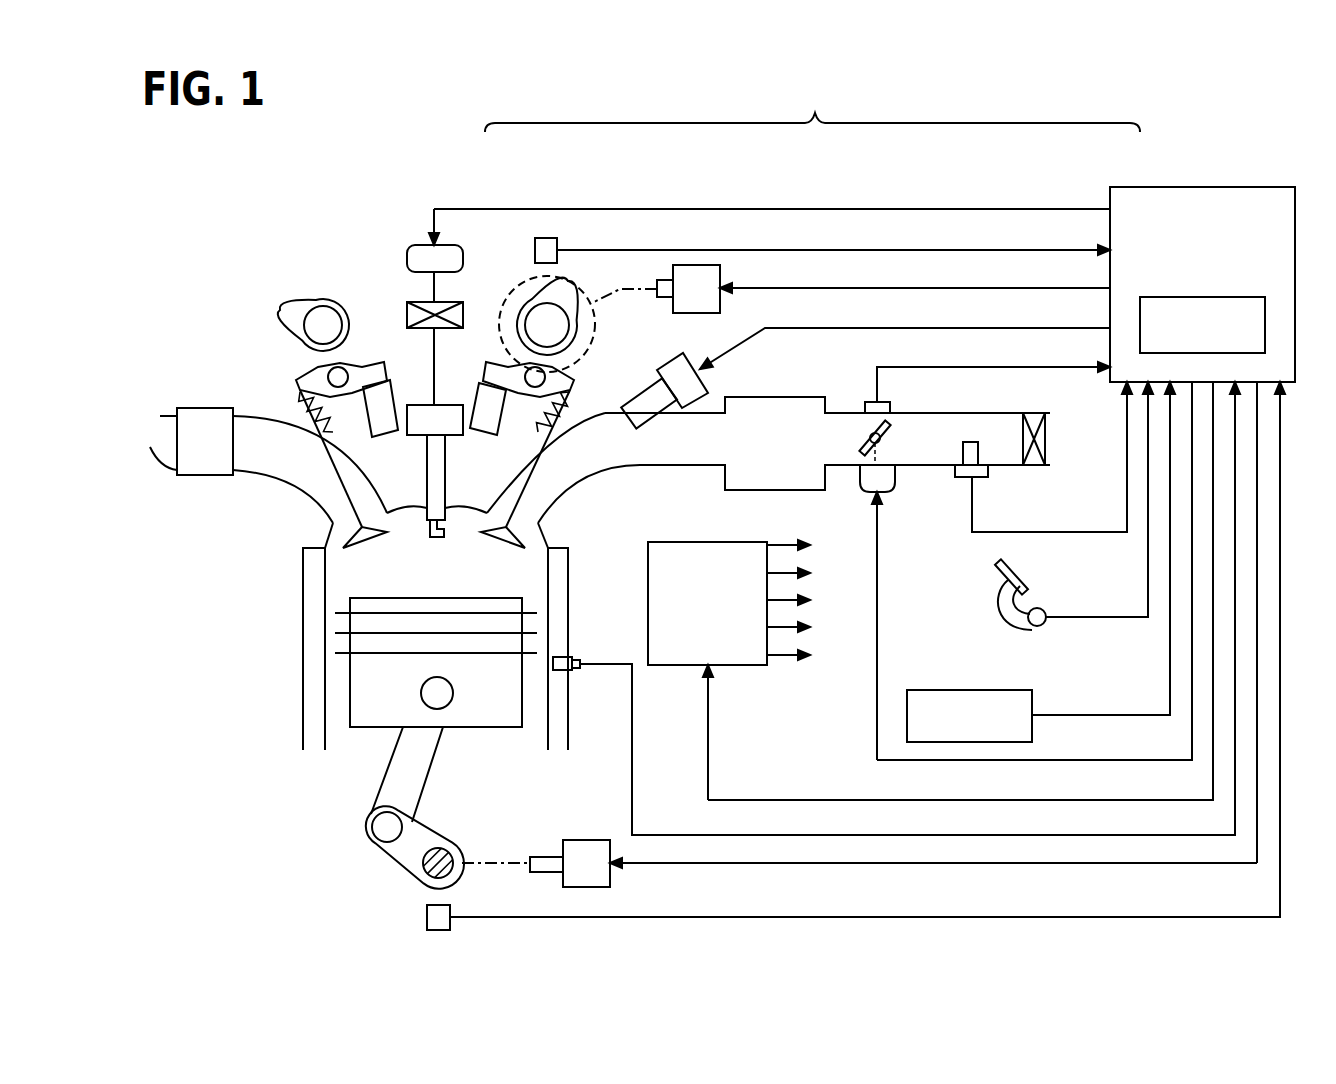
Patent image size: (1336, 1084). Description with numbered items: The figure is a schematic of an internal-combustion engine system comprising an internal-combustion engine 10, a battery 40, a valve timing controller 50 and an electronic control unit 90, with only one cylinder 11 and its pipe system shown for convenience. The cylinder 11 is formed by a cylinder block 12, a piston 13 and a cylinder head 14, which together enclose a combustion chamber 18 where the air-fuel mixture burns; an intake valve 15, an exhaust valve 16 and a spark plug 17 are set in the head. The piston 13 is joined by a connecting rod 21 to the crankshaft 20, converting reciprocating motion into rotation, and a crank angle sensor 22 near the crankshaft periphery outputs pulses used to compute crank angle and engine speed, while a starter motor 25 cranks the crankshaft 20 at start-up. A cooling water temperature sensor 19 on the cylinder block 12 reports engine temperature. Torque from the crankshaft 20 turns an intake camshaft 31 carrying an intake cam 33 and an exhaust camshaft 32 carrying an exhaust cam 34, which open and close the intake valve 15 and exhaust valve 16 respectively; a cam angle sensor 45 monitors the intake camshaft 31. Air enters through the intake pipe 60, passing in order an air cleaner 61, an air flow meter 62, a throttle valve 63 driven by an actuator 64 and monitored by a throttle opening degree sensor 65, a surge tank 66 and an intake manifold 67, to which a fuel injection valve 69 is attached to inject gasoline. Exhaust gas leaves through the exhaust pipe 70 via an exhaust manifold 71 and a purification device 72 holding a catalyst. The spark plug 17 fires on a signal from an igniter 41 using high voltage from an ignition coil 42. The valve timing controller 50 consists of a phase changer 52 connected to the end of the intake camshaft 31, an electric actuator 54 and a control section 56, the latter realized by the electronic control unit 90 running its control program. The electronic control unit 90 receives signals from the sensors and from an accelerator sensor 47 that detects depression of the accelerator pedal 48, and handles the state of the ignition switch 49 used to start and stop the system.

The internal-combustion engine 10 is at (205, 776).
The cylinder 11 is at (290, 682).
The cylinder block 12 is at (325, 735).
The piston 13 is at (513, 728).
The cylinder head 14 is at (398, 510).
The intake valve 15 is at (503, 545).
The exhaust valve 16 is at (366, 545).
The spark plug 17 is at (445, 480).
The combustion chamber 18 is at (333, 553).
The cooling water temperature sensor 19 is at (578, 657).
The crankshaft 20 is at (440, 850).
The connecting rod 21 is at (410, 800).
The crank angle sensor 22 is at (427, 917).
The starter motor 25 is at (585, 840).
The intake camshaft 31 is at (556, 338).
The exhaust camshaft 32 is at (310, 338).
The intake cam 33 is at (560, 300).
The exhaust cam 34 is at (300, 310).
The battery 40 is at (720, 542).
The igniter 41 is at (414, 245).
The ignition coil 42 is at (418, 302).
The cam angle sensor 45 is at (557, 244).
The accelerator sensor 47 is at (1045, 625).
The accelerator pedal 48 is at (1027, 570).
The ignition switch 49 is at (988, 690).
The valve timing controller 50 is at (812, 228).
The phase changer 52 is at (523, 280).
The electric actuator 54 is at (697, 265).
The control section 56 is at (1145, 297).
The intake pipe 60 is at (1003, 413).
The air cleaner 61 is at (1048, 466).
The air flow meter 62 is at (985, 470).
The throttle valve 63 is at (890, 436).
The actuator 64 is at (895, 478).
The throttle opening degree sensor 65 is at (888, 402).
The surge tank 66 is at (775, 397).
The intake manifold 67 is at (645, 465).
The fuel injection valve 69 is at (665, 362).
The exhaust pipe 70 is at (160, 450).
The exhaust manifold 71 is at (265, 476).
The purification device 72 is at (205, 477).
The electronic control unit 90 is at (1183, 187).